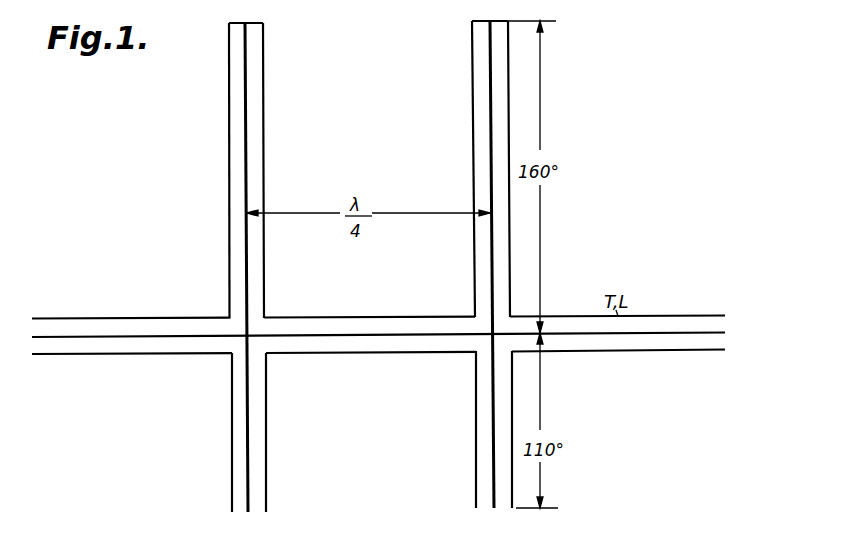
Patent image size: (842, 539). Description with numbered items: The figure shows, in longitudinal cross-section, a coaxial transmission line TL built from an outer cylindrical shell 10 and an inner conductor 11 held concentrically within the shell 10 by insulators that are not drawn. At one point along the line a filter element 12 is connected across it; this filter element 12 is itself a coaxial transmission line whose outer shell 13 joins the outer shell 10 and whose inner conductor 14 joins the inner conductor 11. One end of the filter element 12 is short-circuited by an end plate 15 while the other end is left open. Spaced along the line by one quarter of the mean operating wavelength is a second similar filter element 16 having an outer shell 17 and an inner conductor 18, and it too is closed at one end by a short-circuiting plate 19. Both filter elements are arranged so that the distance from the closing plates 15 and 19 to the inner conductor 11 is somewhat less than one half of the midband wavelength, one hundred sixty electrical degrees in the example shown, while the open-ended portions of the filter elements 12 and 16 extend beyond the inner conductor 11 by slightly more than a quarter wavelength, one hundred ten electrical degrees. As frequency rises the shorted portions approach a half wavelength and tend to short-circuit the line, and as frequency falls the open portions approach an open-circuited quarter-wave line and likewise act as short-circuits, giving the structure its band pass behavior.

The outer cylindrical shell 10 is at (88, 314).
The inner conductor 11 is at (152, 337).
The filter element 12 is at (229, 262).
The outer shell 13 is at (232, 418).
The inner conductor 14 is at (247, 262).
The end plate 15 is at (248, 23).
The second filter element 16 is at (475, 258).
The outer shell 17 is at (476, 415).
The inner conductor 18 is at (493, 258).
The short-circuiting plate 19 is at (478, 21).